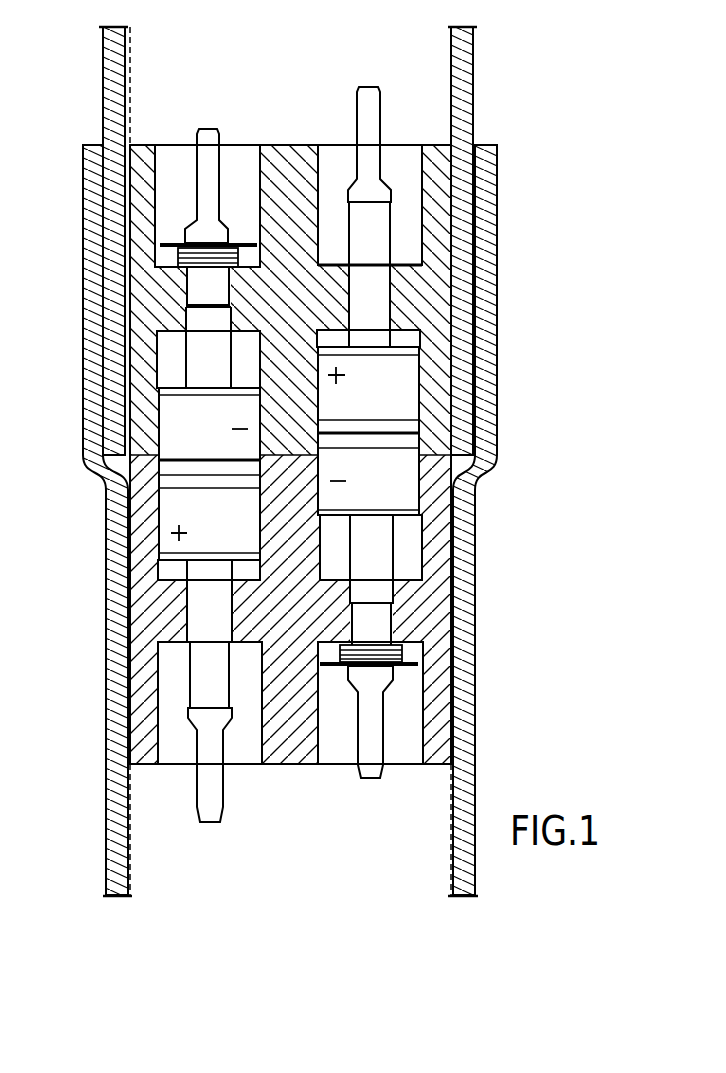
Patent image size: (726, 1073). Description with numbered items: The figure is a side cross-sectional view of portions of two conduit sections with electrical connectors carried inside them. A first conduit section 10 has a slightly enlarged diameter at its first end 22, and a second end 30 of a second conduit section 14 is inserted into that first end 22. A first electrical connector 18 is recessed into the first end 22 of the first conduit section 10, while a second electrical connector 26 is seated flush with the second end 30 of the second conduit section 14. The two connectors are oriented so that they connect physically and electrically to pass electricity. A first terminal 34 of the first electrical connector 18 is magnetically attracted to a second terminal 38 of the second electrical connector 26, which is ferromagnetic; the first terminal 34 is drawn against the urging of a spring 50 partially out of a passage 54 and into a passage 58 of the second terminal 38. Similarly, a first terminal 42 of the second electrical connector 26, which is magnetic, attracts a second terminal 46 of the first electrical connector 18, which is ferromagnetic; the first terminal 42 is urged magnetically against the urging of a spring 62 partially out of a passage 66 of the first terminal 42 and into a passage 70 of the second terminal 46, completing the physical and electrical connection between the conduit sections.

The first conduit section 10 is at (473, 640).
The second conduit section 14 is at (472, 78).
The first electrical connector 18 is at (163, 608).
The first end 22 is at (500, 159).
The second electrical connector 26 is at (165, 295).
The second end 30 is at (462, 447).
The first terminal 34 is at (377, 492).
The second terminal 38 is at (407, 373).
The first terminal 42 is at (175, 440).
The second terminal 46 is at (168, 500).
The spring 50 is at (408, 667).
The passage 54 is at (407, 544).
The passage 58 is at (405, 336).
The spring 62 is at (170, 245).
The passage 66 is at (172, 353).
The passage 70 is at (167, 572).